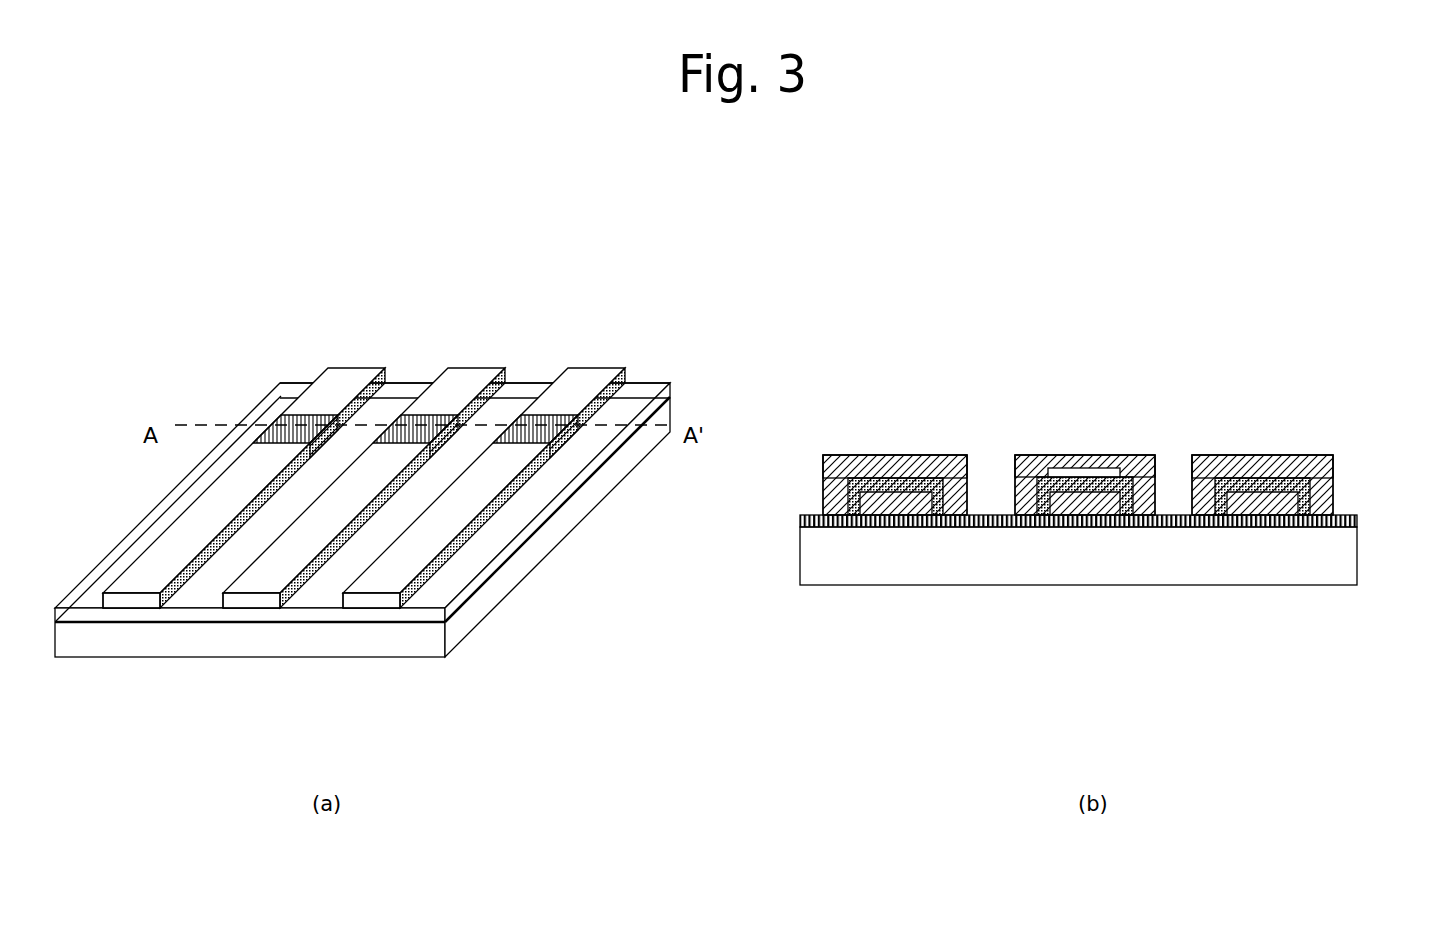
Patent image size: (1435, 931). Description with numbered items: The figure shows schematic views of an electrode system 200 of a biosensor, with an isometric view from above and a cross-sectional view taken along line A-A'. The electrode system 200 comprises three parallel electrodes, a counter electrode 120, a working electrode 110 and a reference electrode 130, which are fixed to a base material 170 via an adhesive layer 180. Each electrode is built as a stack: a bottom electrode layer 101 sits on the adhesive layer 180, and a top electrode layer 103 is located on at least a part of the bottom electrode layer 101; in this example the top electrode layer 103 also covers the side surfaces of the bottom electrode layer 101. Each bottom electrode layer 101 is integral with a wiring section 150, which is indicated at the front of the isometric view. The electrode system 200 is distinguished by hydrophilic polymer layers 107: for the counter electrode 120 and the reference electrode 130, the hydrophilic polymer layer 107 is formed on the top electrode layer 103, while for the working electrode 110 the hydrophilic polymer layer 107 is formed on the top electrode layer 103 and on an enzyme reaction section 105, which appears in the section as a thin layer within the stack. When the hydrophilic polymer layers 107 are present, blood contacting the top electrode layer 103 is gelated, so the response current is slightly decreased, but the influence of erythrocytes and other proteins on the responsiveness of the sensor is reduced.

The bottom electrode layer 101 is at (137, 603).
The top electrode layer 103 is at (885, 480).
The enzyme reaction section 105 is at (1093, 473).
The hydrophilic polymer layer 107 is at (850, 458).
The working electrode 110 is at (412, 397).
The counter electrode 120 is at (535, 462).
The reference electrode 130 is at (873, 466).
The wiring section 150 is at (450, 700).
The base material 170 is at (475, 613).
The adhesive layer 180 is at (507, 556).
The electrode system 200 is at (660, 313).